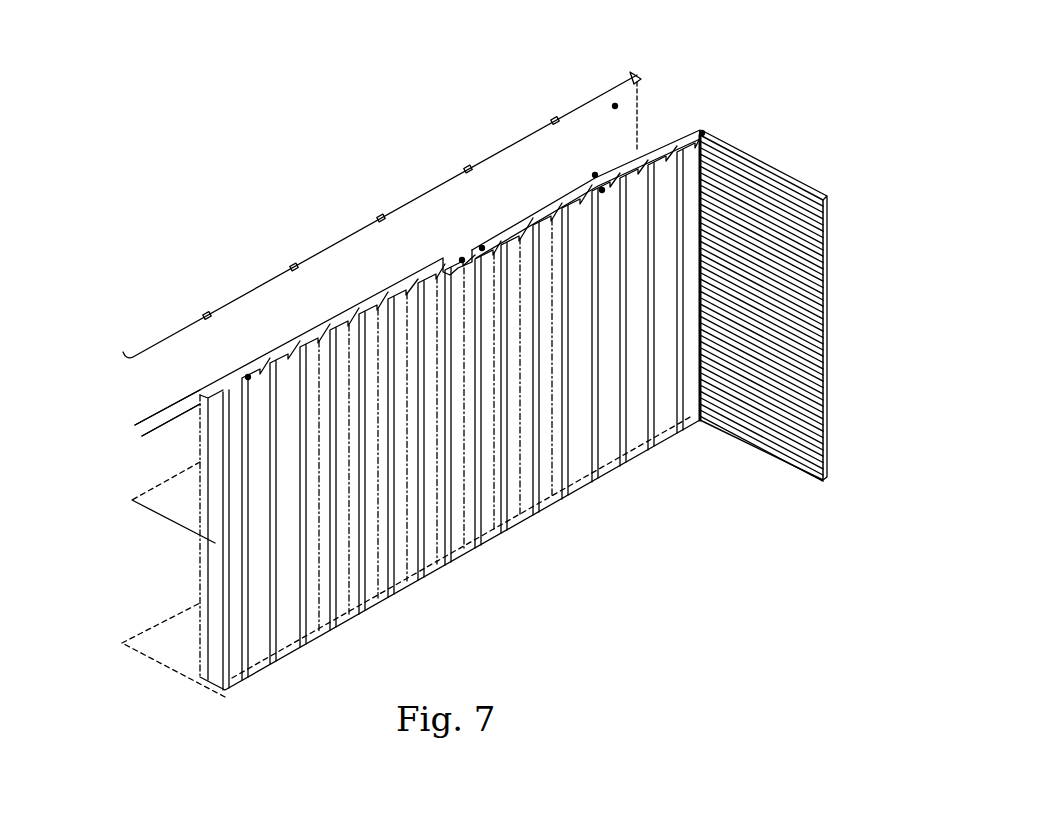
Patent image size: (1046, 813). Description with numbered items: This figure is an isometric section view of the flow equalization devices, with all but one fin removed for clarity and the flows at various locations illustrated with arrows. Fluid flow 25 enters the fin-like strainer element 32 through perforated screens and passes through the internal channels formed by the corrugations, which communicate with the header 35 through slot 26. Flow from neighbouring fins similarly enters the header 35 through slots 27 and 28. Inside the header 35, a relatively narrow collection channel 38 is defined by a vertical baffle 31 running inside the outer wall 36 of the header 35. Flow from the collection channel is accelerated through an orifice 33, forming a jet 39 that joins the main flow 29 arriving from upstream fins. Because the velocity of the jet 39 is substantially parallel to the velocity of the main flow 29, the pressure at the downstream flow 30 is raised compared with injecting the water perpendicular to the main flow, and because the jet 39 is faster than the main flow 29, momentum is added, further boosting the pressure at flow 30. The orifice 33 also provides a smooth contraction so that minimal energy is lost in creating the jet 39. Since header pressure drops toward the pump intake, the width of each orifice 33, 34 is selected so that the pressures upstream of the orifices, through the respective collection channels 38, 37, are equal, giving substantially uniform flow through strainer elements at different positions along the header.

The fluid flow 25 is at (781, 246).
The slot 26 is at (702, 133).
The slot 27 is at (637, 165).
The slot 28 is at (558, 212).
The main flow 29 is at (449, 222).
The downstream flow 30 is at (262, 327).
The vertical baffle 31 is at (595, 175).
The fin-like strainer element 32 is at (823, 363).
The orifice 33 is at (462, 260).
The orifice 34 is at (183, 450).
The header 35 is at (615, 106).
The outer wall 36 is at (602, 190).
The collection channel 37 is at (248, 377).
The collection channel 38 is at (482, 248).
The jet 39 is at (421, 273).